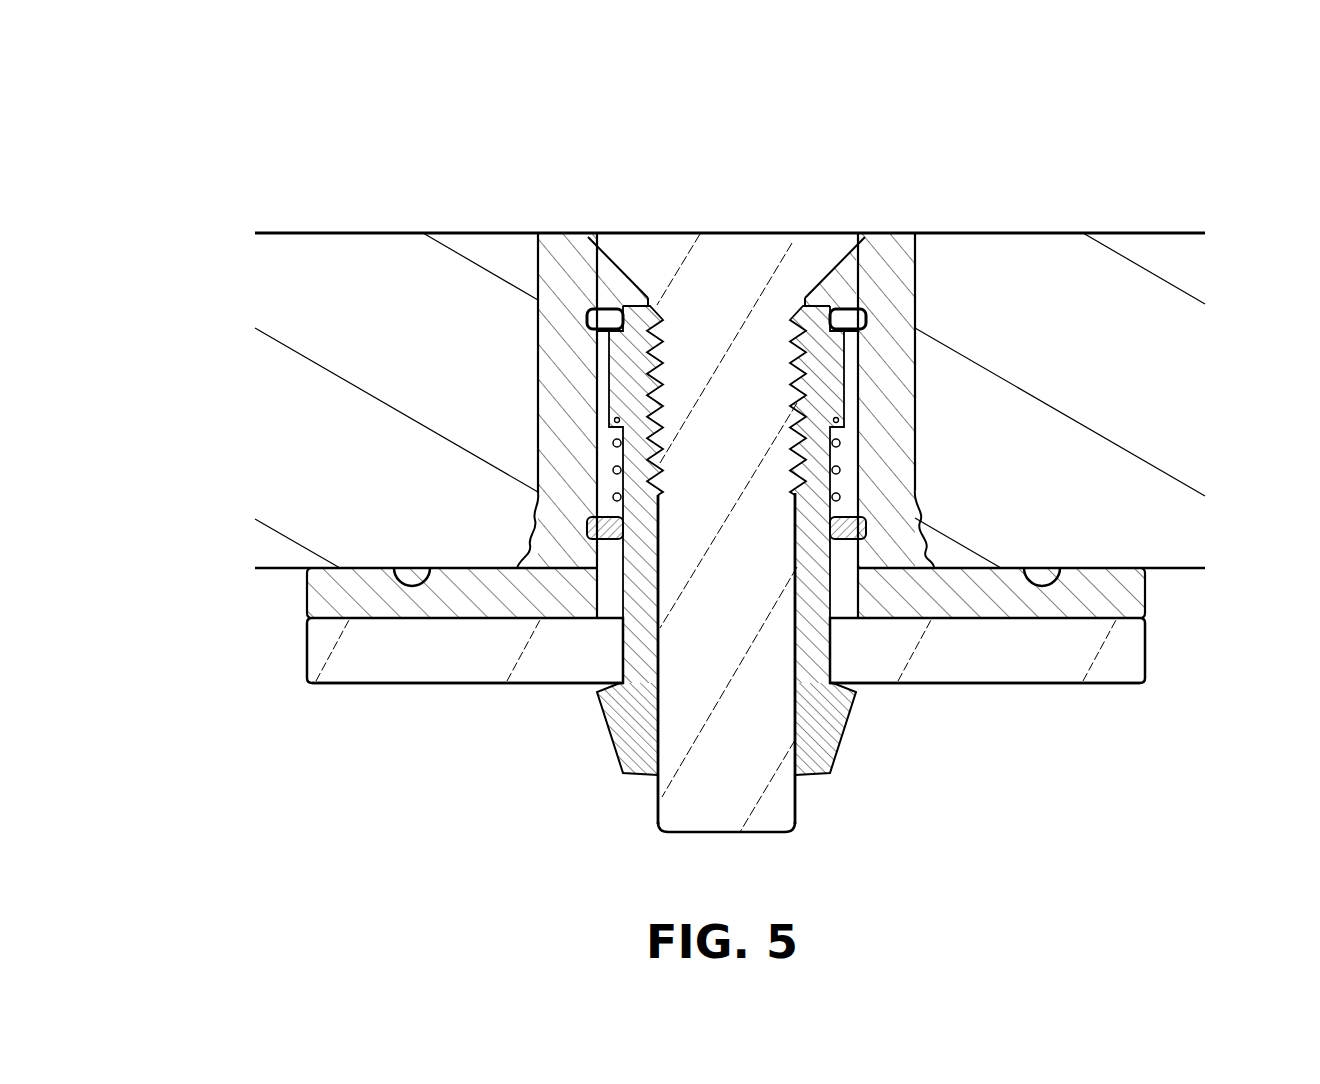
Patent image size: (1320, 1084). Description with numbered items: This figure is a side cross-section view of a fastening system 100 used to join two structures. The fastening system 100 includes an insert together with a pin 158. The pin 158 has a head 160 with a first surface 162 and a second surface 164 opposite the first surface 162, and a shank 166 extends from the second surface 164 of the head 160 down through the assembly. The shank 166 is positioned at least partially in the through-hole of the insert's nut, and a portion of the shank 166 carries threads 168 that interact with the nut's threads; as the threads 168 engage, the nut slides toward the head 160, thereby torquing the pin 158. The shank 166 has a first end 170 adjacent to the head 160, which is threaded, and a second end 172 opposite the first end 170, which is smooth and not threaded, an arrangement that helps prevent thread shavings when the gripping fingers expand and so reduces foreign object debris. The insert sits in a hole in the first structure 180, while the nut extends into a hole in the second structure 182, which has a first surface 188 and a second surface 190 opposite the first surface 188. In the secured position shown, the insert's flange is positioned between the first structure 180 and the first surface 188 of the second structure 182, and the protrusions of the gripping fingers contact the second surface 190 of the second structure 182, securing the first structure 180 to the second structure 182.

The fastening system 100 is at (148, 92).
The pin 158 is at (730, 232).
The head 160 is at (807, 257).
The first surface 162 is at (575, 222).
The second surface 164 is at (920, 283).
The shank 166 is at (765, 563).
The threads 168 is at (782, 420).
The first end 170 is at (622, 297).
The second end 172 is at (635, 818).
The first structure 180 is at (300, 232).
The second structure 182 is at (313, 650).
The first surface 188 is at (375, 600).
The second surface 190 is at (372, 692).